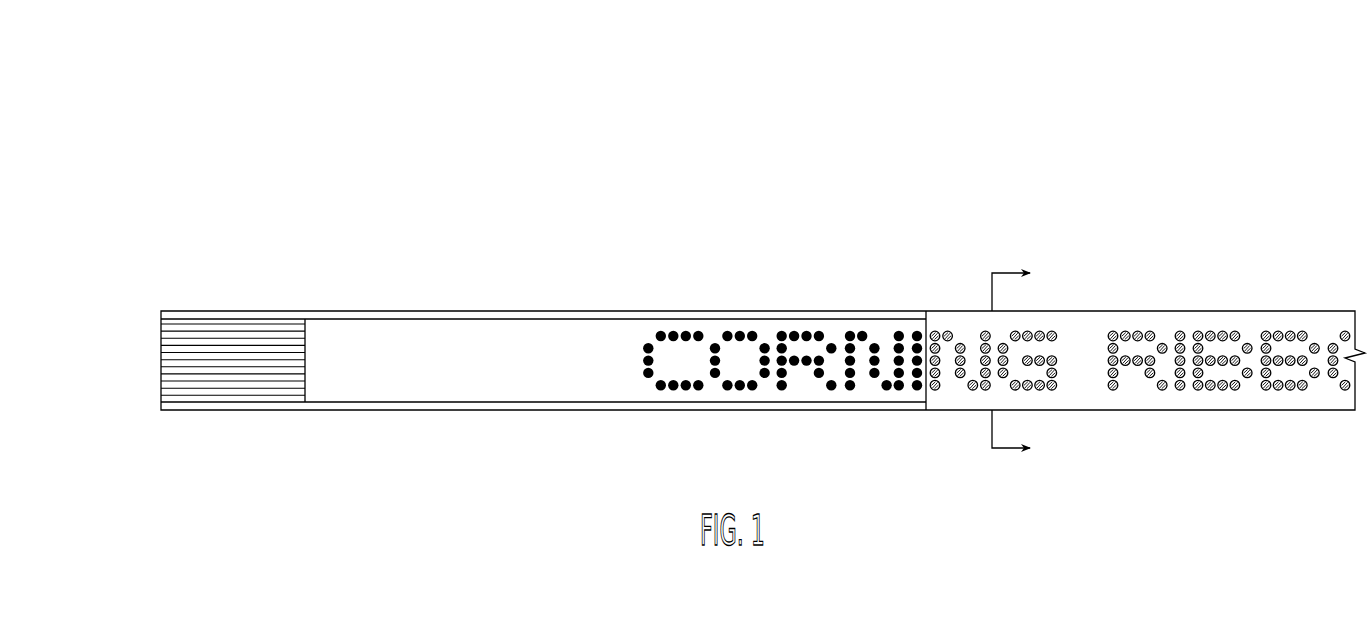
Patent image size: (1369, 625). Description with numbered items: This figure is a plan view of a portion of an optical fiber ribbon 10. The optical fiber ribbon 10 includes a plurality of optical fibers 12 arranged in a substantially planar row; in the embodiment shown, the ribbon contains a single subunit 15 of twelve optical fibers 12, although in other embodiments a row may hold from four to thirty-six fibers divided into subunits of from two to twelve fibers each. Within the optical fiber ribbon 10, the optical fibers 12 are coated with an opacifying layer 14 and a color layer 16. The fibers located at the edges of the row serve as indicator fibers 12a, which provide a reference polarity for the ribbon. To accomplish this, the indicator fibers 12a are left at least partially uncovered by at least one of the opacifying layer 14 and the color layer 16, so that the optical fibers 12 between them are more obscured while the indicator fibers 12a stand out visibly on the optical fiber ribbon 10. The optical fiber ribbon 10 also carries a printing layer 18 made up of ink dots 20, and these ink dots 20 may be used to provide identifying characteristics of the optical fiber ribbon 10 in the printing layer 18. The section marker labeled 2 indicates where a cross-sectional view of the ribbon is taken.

The optical fiber ribbon 10 is at (891, 138).
The optical fibers 12 is at (161, 328).
The indicator fibers 12a is at (361, 311).
The opacifying layer 14 is at (387, 343).
The subunit 15 is at (176, 420).
The color layer 16 is at (1078, 393).
The printing layer 18 is at (757, 318).
The ink dots 20 is at (686, 390).
The section line 2- 2 is at (1020, 361).